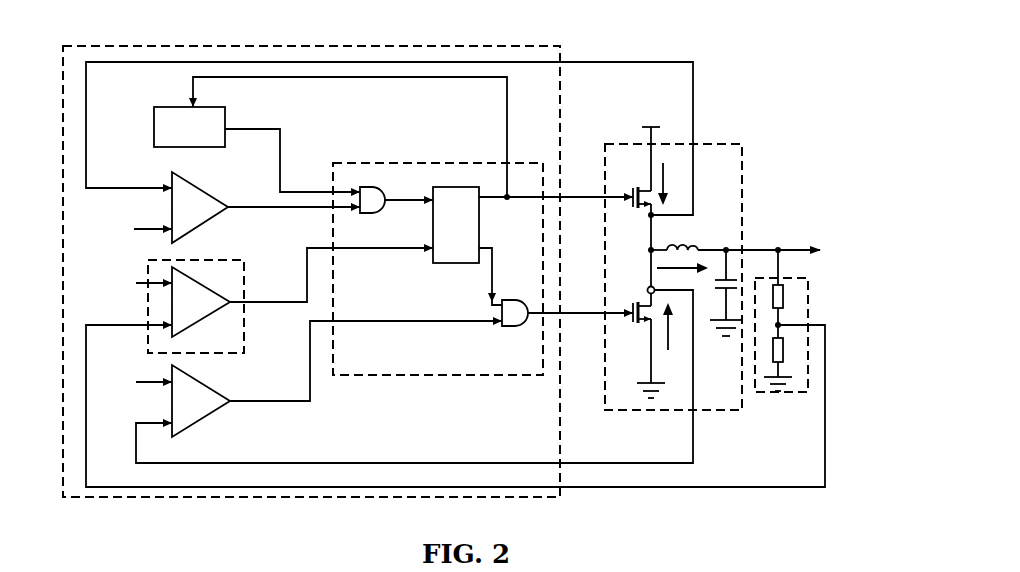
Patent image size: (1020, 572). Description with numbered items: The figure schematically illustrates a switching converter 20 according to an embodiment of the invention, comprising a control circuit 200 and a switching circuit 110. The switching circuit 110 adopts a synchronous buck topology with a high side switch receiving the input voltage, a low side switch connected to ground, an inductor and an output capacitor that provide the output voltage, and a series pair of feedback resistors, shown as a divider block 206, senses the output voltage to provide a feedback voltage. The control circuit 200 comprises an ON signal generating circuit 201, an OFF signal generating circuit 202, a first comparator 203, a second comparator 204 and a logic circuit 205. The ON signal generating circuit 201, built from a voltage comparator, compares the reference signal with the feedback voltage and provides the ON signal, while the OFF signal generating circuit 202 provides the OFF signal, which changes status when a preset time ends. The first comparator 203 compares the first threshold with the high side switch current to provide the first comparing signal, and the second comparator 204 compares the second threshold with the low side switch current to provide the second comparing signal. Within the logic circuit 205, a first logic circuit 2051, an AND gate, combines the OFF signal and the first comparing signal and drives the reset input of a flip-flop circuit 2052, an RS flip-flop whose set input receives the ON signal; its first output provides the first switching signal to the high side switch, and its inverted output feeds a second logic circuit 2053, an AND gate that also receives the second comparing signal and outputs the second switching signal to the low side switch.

The switching converter 20 is at (782, 115).
The control circuit 200 is at (560, 87).
The ON signal generating circuit 201 is at (244, 323).
The OFF signal generating circuit 202 is at (215, 107).
The first comparator 203 is at (192, 230).
The second comparator 204 is at (194, 425).
The logic circuit 205 is at (412, 163).
The first logic circuit 2051 is at (374, 213).
The flip-flop circuit 2052 is at (479, 207).
The second logic circuit 2053 is at (510, 326).
The switching circuit 110 is at (742, 190).
The feedback voltage divider 206 is at (782, 278).